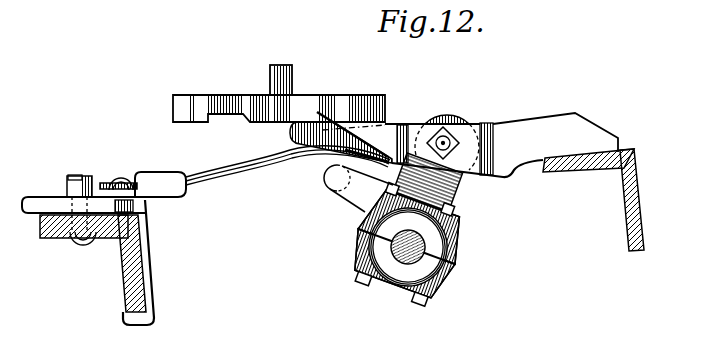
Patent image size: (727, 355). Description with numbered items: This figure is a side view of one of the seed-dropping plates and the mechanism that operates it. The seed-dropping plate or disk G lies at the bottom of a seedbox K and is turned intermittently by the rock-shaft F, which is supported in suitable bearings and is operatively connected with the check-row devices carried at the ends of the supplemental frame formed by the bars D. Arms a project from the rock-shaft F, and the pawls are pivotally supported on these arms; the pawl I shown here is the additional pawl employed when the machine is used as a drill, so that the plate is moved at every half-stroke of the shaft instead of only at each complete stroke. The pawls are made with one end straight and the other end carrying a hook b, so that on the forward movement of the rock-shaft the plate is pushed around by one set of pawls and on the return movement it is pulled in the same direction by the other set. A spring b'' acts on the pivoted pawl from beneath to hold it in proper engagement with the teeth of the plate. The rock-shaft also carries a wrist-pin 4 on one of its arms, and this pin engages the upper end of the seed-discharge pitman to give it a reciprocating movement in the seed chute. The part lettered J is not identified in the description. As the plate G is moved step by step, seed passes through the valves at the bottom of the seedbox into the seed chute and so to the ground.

The seed-dropping plate G is at (292, 93).
The hook b is at (322, 137).
The spring b'' is at (341, 169).
The seedbox K is at (293, 150).
The pawl I is at (470, 145).
The arm a is at (458, 190).
The wrist-pin 4 is at (327, 188).
The rock-shaft F is at (404, 262).
The bearing housing J is at (449, 286).
The bar D is at (121, 270).